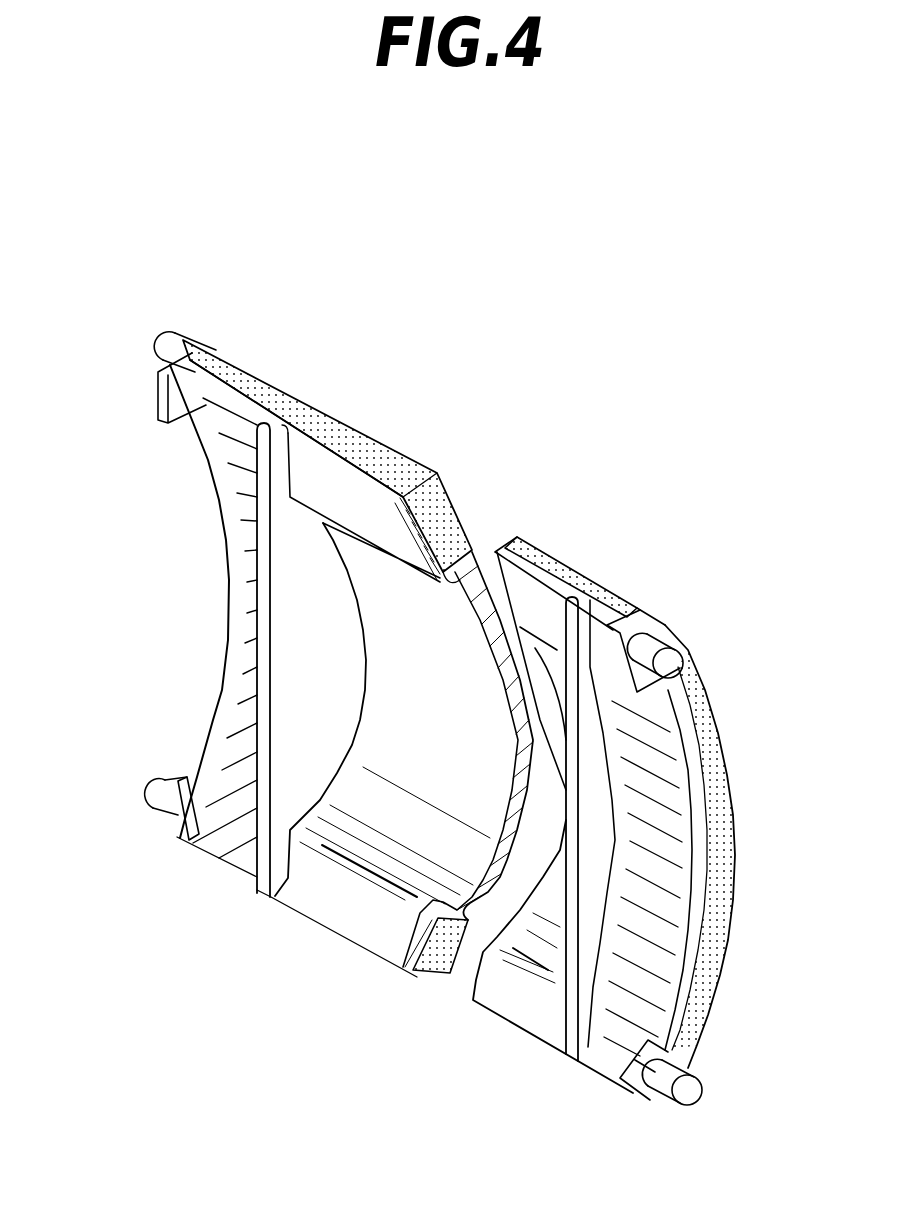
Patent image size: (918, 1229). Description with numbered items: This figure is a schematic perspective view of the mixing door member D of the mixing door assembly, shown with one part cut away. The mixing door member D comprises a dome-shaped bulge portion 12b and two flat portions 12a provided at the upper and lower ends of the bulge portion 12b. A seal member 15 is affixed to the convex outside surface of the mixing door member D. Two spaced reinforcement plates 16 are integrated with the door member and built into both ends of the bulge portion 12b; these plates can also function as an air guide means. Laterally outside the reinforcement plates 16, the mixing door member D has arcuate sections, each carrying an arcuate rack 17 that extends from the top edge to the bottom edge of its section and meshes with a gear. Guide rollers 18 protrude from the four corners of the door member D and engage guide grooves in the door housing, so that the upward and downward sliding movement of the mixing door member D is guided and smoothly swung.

The flat portion 12a is at (375, 503).
The bulge portion 12b is at (470, 721).
The seal member 15 is at (290, 398).
The reinforcement plate 16 is at (262, 865).
The arcuate rack 17 is at (252, 523).
The guide roller 18 is at (182, 338).
The mixing door member D is at (748, 568).